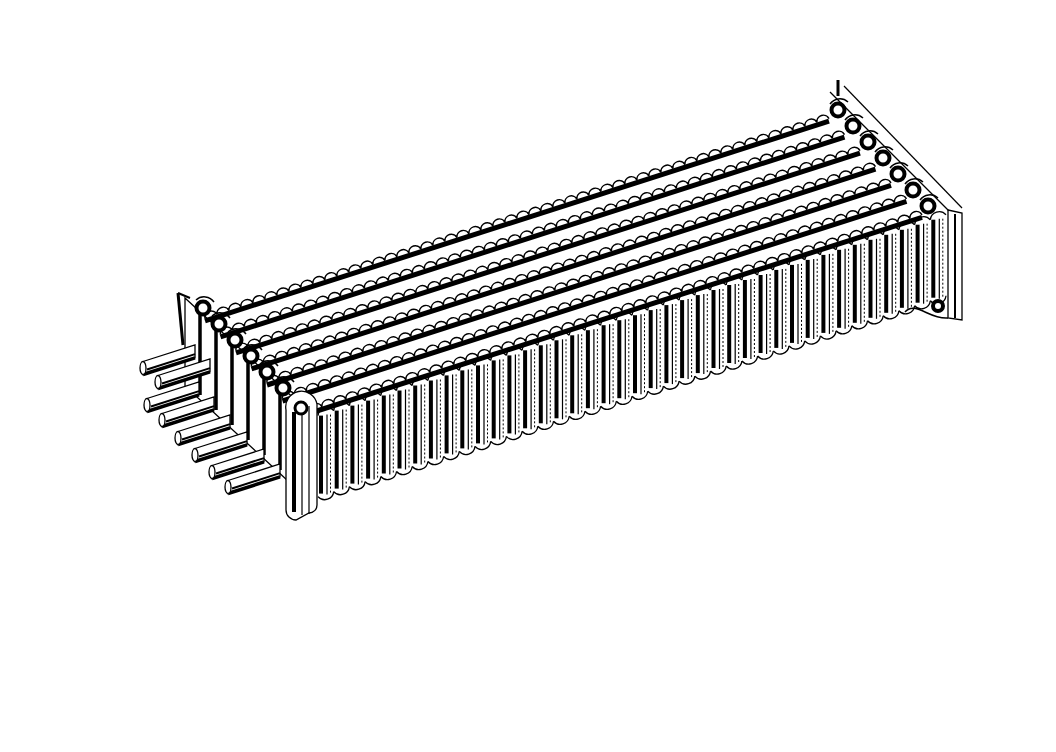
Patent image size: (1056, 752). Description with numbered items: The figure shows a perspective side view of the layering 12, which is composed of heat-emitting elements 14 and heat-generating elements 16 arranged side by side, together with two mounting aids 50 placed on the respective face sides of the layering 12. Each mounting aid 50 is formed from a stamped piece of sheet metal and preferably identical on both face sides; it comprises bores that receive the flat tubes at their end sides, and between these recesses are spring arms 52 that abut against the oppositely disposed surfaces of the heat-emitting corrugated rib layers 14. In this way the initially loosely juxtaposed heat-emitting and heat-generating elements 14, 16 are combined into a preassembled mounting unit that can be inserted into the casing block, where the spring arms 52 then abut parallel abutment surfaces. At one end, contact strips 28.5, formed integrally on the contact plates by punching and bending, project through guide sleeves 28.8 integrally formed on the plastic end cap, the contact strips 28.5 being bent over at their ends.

The layering 12 is at (628, 134).
The heat-emitting elements 14 is at (565, 268).
The heat-generating elements 16 is at (425, 306).
The contact strip 28.5 is at (214, 495).
The guide sleeves 28.8 is at (254, 497).
The mounting aid 50 is at (270, 517).
The spring arms 52 is at (938, 202).